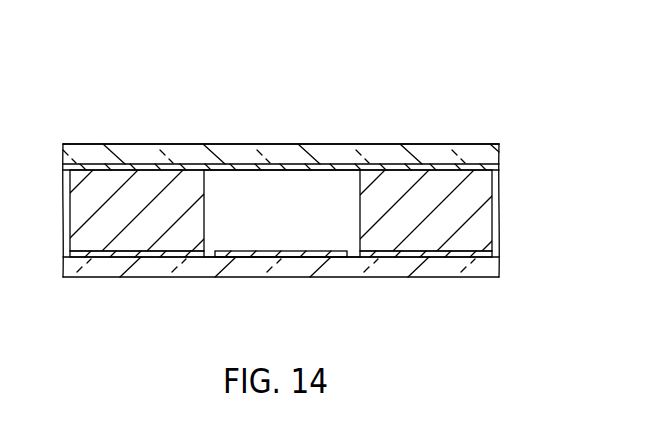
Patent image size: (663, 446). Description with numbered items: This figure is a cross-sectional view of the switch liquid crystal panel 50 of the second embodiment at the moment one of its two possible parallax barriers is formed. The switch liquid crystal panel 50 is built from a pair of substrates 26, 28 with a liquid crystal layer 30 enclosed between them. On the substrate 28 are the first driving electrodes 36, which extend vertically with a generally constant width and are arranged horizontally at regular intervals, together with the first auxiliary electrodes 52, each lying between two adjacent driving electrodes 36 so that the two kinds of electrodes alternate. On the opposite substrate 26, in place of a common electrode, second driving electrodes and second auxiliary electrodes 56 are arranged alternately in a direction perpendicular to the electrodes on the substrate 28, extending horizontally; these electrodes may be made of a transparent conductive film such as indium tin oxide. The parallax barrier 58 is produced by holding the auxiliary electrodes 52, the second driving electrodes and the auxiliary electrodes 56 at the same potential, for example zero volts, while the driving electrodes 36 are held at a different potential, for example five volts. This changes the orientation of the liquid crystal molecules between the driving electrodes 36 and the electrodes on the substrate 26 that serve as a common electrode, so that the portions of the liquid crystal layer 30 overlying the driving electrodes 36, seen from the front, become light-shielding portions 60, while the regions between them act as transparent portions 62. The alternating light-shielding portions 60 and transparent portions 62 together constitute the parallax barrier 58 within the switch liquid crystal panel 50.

The switch liquid crystal panel 50 is at (481, 144).
The substrate 26 is at (461, 158).
The substrate 28 is at (435, 267).
The liquid crystal layer 30 is at (224, 185).
The driving electrodes 36 is at (131, 259).
The auxiliary electrodes 52 is at (221, 259).
The auxiliary electrodes 56 is at (158, 167).
The parallax barrier 58 is at (392, 167).
The light-shielding portions 60 is at (144, 230).
The transparent portions 62 is at (276, 231).